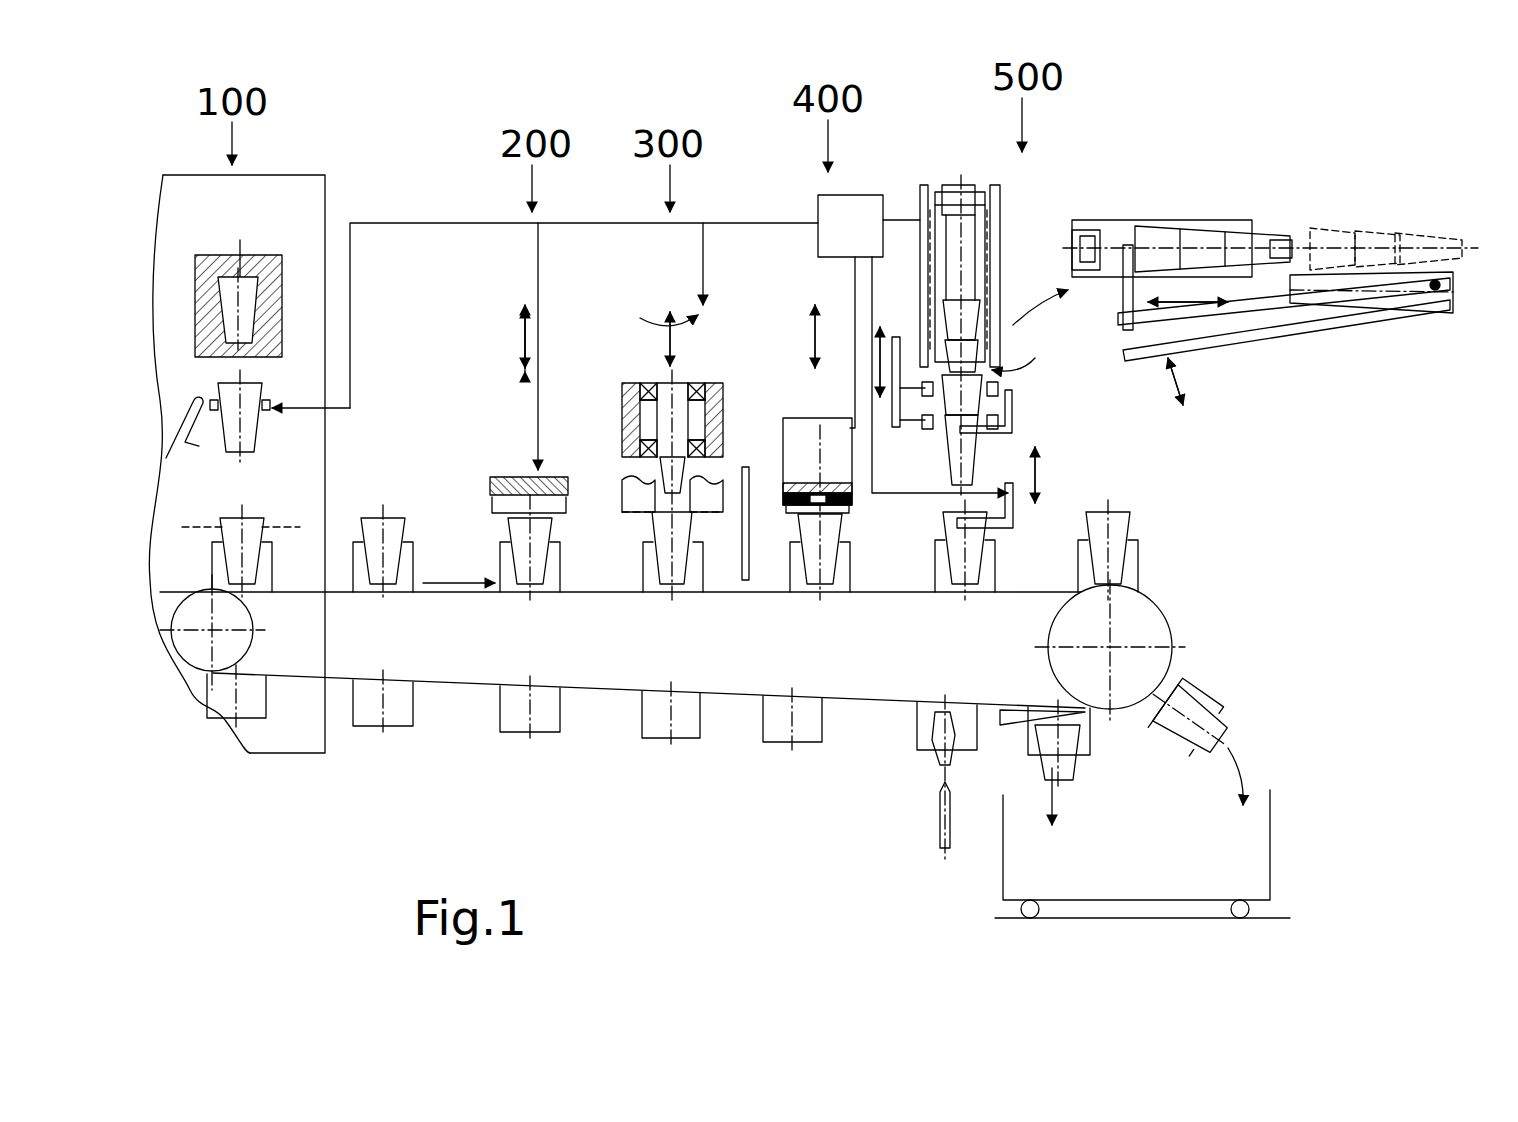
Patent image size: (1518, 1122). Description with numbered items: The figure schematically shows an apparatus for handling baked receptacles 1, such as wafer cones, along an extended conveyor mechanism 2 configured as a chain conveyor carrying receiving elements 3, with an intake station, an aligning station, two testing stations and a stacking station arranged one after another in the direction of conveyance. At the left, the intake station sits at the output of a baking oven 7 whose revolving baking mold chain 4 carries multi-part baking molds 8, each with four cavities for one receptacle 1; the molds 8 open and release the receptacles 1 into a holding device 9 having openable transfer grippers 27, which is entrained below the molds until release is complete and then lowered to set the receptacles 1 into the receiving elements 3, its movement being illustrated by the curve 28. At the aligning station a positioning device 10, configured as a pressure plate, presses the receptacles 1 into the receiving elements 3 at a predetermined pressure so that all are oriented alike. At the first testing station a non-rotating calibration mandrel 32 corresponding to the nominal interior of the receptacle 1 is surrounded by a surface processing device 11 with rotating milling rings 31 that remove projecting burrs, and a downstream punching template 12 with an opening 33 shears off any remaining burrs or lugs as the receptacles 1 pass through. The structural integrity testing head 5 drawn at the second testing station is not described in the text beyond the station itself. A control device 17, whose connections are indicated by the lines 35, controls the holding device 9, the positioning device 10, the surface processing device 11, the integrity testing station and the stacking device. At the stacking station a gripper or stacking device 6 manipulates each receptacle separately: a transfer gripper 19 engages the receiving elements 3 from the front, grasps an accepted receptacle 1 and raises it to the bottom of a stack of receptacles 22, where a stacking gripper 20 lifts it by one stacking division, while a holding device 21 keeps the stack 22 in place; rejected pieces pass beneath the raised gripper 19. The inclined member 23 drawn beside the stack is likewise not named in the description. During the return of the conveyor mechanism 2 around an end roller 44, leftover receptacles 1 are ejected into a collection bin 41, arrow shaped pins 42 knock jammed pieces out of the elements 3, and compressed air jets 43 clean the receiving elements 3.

The receptacles 1 is at (253, 304).
The conveyor mechanism 2 is at (595, 594).
The receiving elements 3 is at (266, 572).
The baking mold chain 4 is at (250, 250).
The press head 5 is at (855, 517).
The gripper or stacking device 6 is at (1042, 438).
The baking oven 7 is at (322, 196).
The baking molds 8 is at (275, 349).
The holding device 9 is at (265, 414).
The positioning device 10 is at (553, 470).
The surface processing device 11 is at (618, 452).
The punching template 12 is at (765, 485).
The control device 17 is at (850, 206).
The transfer gripper 19 is at (1018, 394).
The stacking gripper 20 is at (900, 425).
The holding device 21 is at (995, 249).
The stack of receptacles 22 is at (1222, 192).
The slide 23 is at (1220, 352).
The transfer grippers 27 is at (289, 526).
The curve 28 is at (146, 418).
The rotating milling rings 31 is at (700, 510).
The calibration mandrel 32 is at (684, 478).
The opening 33 is at (749, 520).
The lines 35 is at (773, 225).
The collection bin 41 is at (1262, 841).
The arrow shaped pins 42 is at (1004, 722).
The compressed air jets 43 is at (935, 815).
The end roller 44 is at (1155, 621).